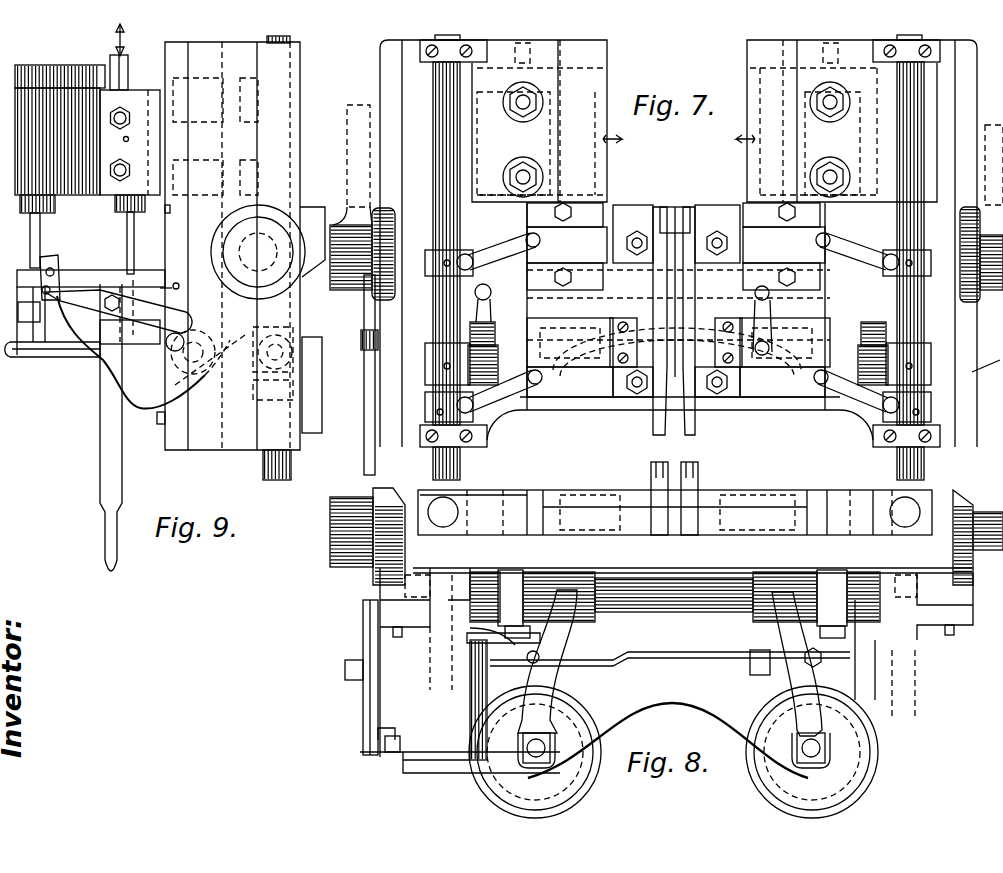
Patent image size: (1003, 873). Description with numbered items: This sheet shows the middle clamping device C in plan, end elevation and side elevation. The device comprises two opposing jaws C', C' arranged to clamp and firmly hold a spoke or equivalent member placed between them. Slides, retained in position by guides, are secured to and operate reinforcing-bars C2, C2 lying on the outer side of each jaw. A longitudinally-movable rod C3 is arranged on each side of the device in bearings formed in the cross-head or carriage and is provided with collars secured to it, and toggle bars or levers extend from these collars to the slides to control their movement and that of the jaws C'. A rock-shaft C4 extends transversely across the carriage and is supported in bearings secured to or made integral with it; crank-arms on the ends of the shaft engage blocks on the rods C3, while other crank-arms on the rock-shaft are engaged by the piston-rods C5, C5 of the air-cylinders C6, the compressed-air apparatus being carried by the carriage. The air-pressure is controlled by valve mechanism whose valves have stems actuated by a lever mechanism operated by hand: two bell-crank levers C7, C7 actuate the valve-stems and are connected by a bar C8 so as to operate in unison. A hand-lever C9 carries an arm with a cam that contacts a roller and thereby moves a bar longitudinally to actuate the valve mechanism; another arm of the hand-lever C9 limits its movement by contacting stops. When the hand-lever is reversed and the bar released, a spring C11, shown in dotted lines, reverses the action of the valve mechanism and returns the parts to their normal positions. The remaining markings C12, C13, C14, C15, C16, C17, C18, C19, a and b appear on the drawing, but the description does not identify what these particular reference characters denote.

In FIG. 9, the middle clamping device C is at (241, 243).
In FIG. 7, the middle clamping device C is at (678, 241).
In FIG. 8, the middle clamping device C is at (675, 512).
In FIG. 7, the jaws C' is at (678, 319).
In FIG. 8, the jaws C' is at (675, 496).
In FIG. 7, the reinforcing-bars C2 is at (678, 313).
In FIG. 8, the reinforcing-bars C2 is at (620, 500).
In FIG. 9, the longitudinally-movable rod C3 is at (303, 464).
In FIG. 7, the longitudinally-movable rod C3 is at (462, 235).
In FIG. 8, the longitudinally-movable rod C3 is at (674, 512).
In FIG. 9, the rock-shaft C4 is at (240, 364).
In FIG. 8, the rock-shaft C4 is at (678, 612).
In FIG. 8, the piston-rods C5 is at (470, 585).
In FIG. 9, the air-cylinders C6 is at (75, 192).
In FIG. 7, the air-cylinders C6 is at (678, 353).
In FIG. 8, the air-cylinders C6 is at (673, 752).
In FIG. 9, the bell-crank levers C7 is at (151, 352).
In FIG. 8, the bell-crank levers C7 is at (658, 663).
In FIG. 9, the bar C8 is at (130, 109).
In FIG. 9, the hand-lever C9 is at (134, 237).
In FIG. 7, the hand-lever C9 is at (364, 396).
In FIG. 7, the spring C11 is at (598, 372).
In FIG. 8, the base plate C12 is at (447, 752).
In FIG. 8, the nut C13 is at (400, 750).
In FIG. 7, the standard C14 is at (987, 363).
In FIG. 8, the standard C14 is at (363, 712).
In FIG. 8, the bracket C15 is at (388, 730).
In FIG. 9, the guide bar C16 is at (70, 352).
In FIG. 8, the guide bar C16 is at (470, 690).
In FIG. 9, the lever C17 is at (116, 294).
In FIG. 9, the pivot C18 is at (183, 291).
In FIG. 9, the roller C19 is at (184, 337).
In FIG. 8, the base a is at (425, 585).
In FIG. 7, the bracket b is at (358, 128).